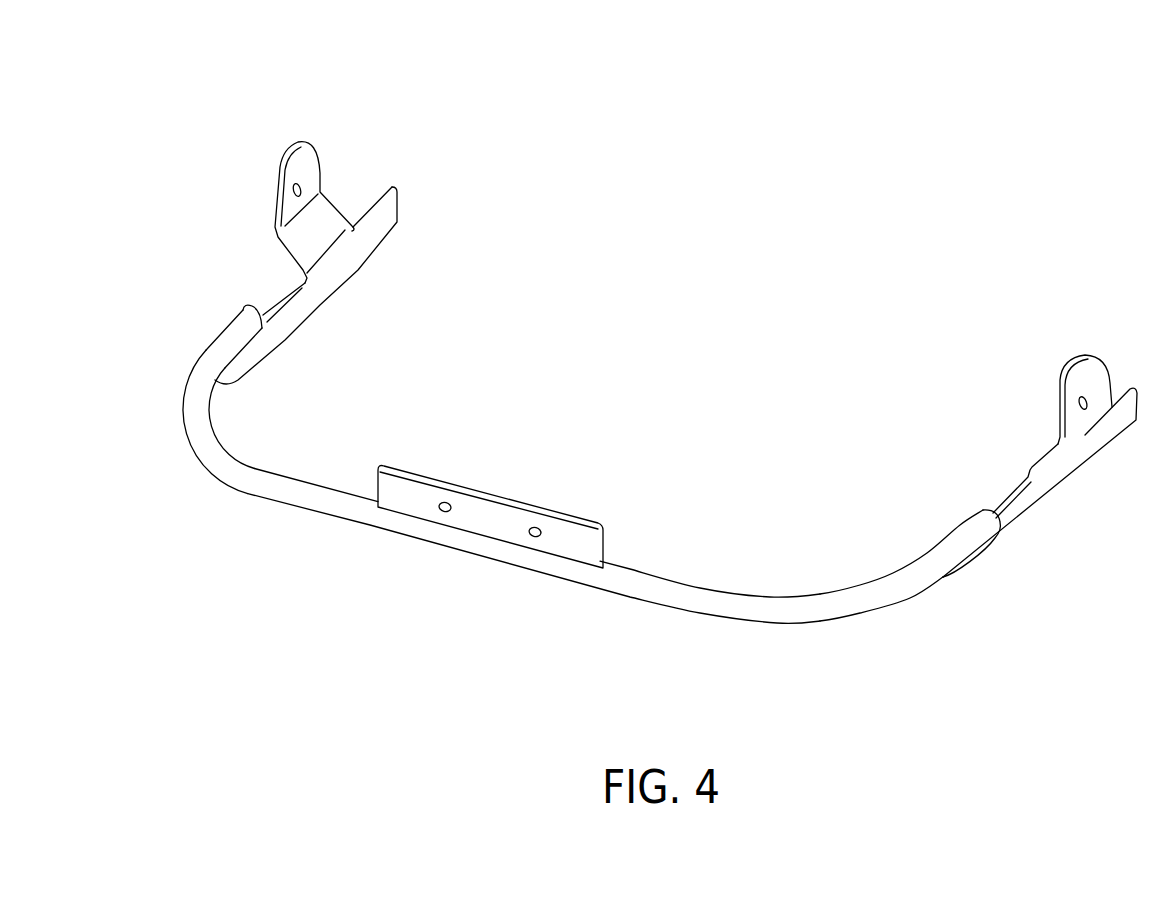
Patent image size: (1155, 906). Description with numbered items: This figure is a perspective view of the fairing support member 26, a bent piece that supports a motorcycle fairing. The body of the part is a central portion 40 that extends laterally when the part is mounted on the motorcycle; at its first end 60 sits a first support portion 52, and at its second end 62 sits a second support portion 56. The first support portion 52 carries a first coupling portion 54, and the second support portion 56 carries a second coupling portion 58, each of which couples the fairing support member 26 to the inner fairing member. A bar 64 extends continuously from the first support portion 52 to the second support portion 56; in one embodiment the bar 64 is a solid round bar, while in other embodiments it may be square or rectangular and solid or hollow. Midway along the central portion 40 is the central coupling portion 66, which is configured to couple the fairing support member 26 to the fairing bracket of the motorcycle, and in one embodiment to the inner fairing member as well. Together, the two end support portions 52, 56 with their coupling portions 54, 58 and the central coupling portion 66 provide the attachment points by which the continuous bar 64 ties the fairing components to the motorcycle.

The fairing support member 26 is at (258, 582).
The central portion 40 is at (648, 586).
The first support portion 52 is at (357, 318).
The first coupling portion 54 is at (332, 157).
The second support portion 56 is at (966, 460).
The second coupling portion 58 is at (1069, 358).
The first end 60 is at (244, 447).
The second end 62 is at (791, 593).
The bar 64 is at (863, 597).
The central coupling portion 66 is at (490, 518).